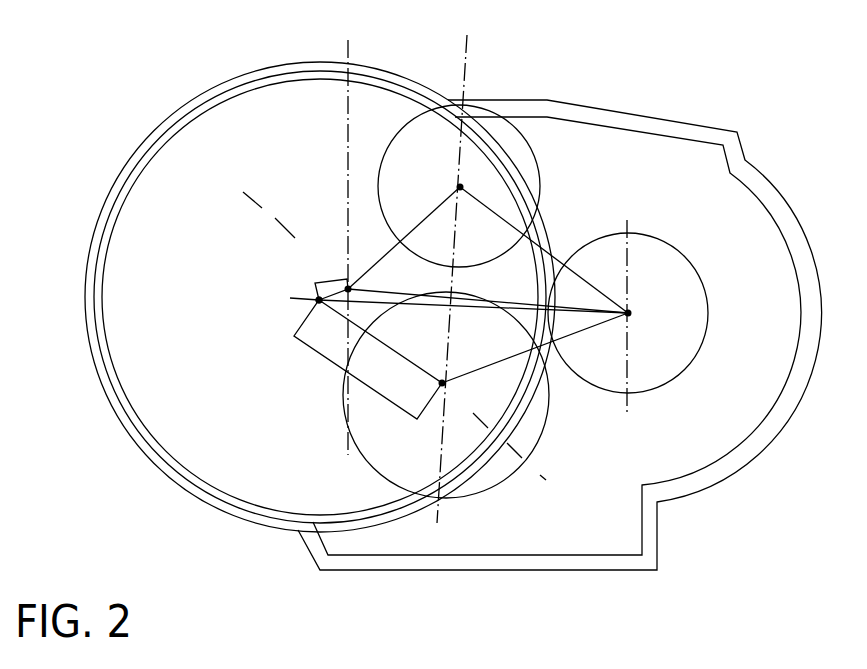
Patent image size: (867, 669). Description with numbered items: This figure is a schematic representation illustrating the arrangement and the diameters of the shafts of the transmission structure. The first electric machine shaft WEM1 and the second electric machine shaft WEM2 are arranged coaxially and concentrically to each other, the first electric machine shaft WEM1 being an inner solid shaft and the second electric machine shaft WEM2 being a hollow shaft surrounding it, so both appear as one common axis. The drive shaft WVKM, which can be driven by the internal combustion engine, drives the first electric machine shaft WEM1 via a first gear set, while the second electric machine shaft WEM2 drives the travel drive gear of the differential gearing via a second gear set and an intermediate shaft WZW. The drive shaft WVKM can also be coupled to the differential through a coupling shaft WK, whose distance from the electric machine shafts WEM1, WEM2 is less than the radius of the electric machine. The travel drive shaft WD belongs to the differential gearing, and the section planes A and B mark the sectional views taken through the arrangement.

The first electric machine shaft WEM1 is at (319, 300).
The second electric machine shaft WEM2 is at (319, 300).
The drive shaft WVKM is at (348, 289).
The coupling shaft WK is at (460, 187).
The intermediate shaft WZW is at (442, 383).
The travel drive shaft WD is at (628, 313).
The section plane A is at (458, 65).
The section plane B is at (262, 219).